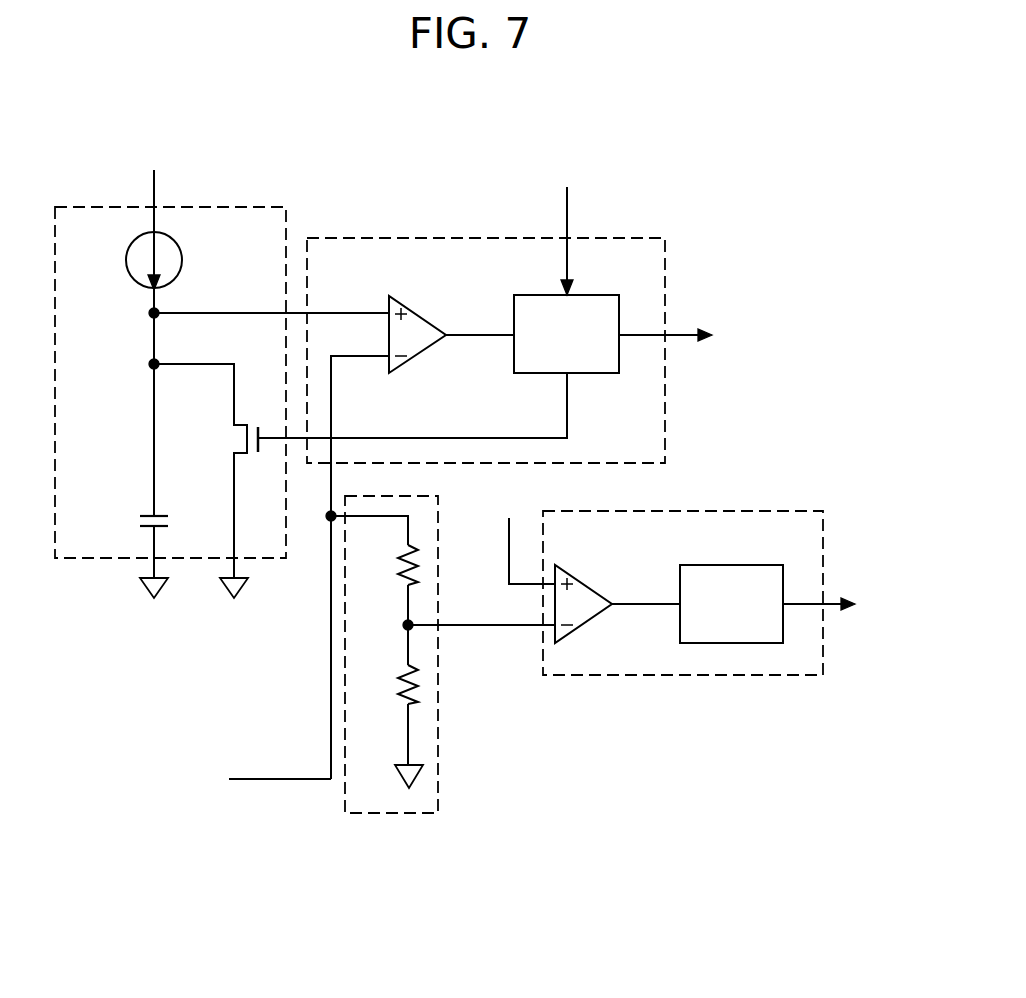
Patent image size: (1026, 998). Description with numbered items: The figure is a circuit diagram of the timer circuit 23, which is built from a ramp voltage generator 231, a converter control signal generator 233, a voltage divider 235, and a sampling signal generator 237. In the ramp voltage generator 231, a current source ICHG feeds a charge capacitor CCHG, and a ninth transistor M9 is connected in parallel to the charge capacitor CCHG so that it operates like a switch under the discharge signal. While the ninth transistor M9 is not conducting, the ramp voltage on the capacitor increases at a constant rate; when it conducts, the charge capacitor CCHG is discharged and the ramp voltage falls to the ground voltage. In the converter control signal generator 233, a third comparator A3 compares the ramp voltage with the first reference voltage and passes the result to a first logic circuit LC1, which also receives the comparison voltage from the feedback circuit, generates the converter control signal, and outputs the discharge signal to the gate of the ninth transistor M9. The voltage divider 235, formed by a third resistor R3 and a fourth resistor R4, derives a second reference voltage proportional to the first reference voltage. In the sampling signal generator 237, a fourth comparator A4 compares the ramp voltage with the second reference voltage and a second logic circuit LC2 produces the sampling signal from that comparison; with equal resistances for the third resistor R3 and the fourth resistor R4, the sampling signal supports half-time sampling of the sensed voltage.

The timer circuit 23 is at (700, 141).
The ramp voltage generator 231 is at (250, 206).
The converter control signal generator 233 is at (635, 237).
The voltage divider 235 is at (420, 813).
The sampling signal generator 237 is at (730, 511).
The third comparator A3 is at (418, 312).
The fourth comparator A4 is at (585, 580).
The first logic circuit LC1 is at (600, 295).
The second logic circuit LC2 is at (765, 565).
The ninth transistor M9 is at (206, 471).
The third resistor R3 is at (391, 565).
The fourth resistor R4 is at (392, 684).
The current source ICHG is at (183, 261).
The charge capacitor CCHG is at (121, 520).